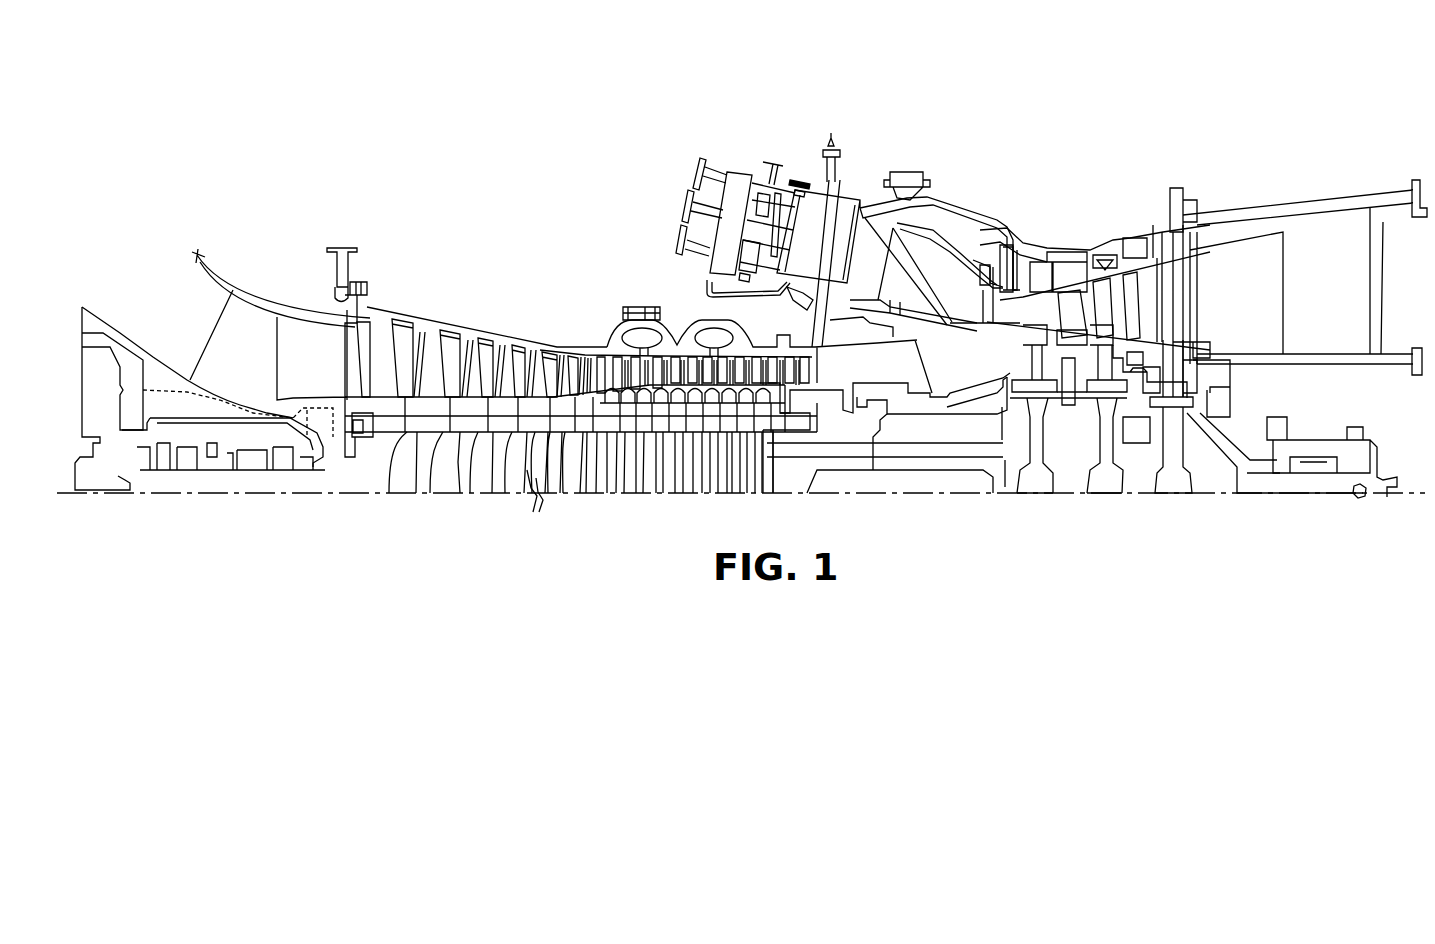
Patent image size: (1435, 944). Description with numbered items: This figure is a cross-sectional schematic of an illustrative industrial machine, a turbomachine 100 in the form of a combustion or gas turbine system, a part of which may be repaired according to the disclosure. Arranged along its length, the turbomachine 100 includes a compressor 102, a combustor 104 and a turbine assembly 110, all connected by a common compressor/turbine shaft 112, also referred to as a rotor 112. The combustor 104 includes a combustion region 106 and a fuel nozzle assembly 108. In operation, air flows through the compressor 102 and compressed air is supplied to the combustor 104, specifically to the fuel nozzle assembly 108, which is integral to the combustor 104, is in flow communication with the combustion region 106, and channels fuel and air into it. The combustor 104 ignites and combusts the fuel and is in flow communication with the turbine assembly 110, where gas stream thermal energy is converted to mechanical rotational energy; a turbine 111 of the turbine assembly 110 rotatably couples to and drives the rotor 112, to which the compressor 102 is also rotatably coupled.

The turbomachine 100 is at (250, 113).
The compressor 102 is at (460, 326).
The combustor 104 is at (847, 110).
The combustion region 106 is at (821, 227).
The fuel nozzle assembly 108 is at (751, 178).
The turbine assembly 110 is at (1153, 232).
The turbine 111 is at (1160, 305).
The common compressor/turbine shaft 112 is at (386, 437).